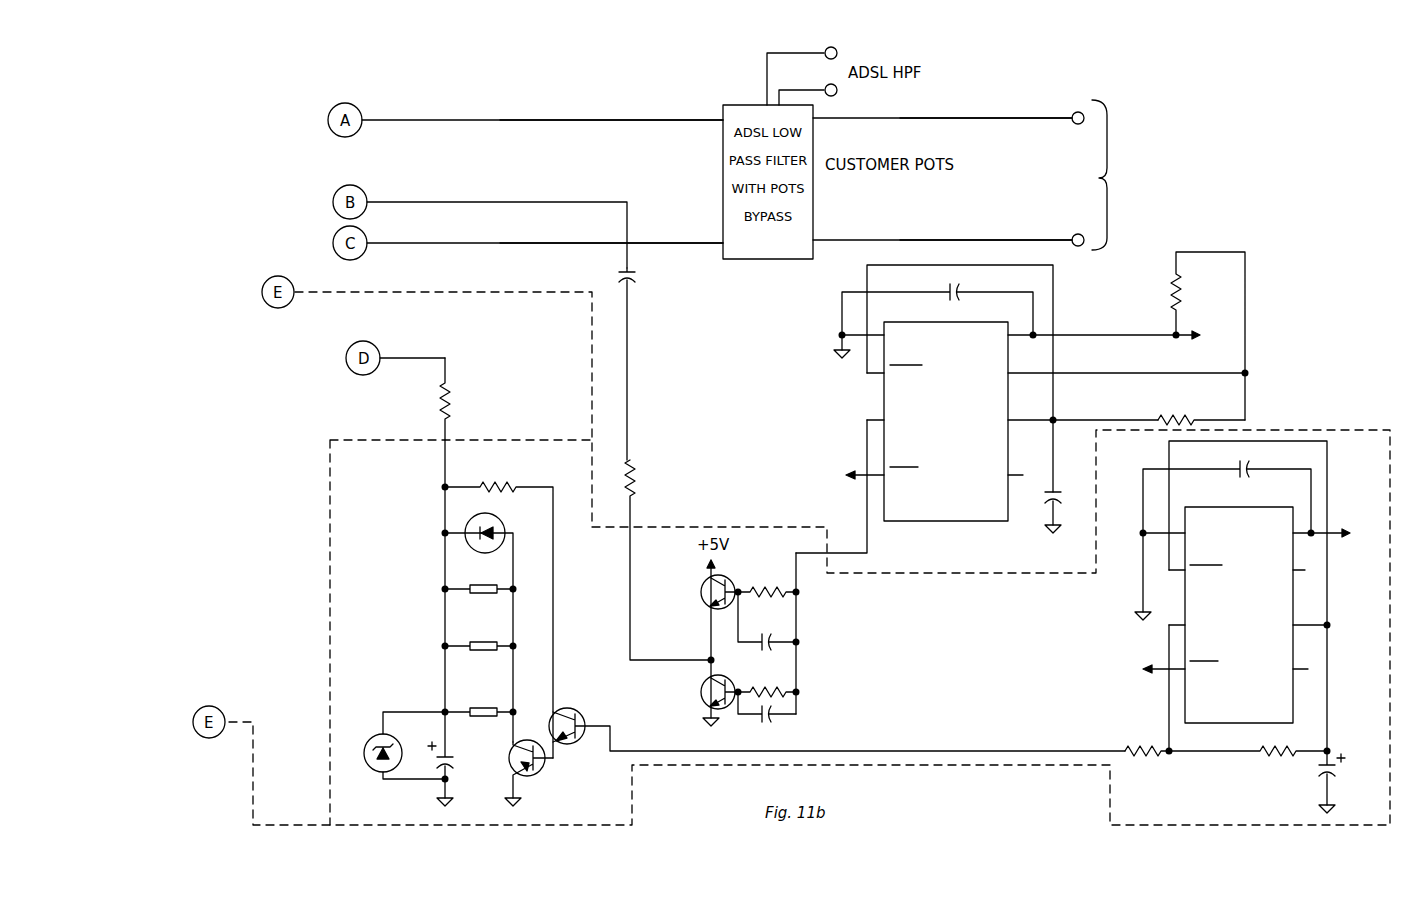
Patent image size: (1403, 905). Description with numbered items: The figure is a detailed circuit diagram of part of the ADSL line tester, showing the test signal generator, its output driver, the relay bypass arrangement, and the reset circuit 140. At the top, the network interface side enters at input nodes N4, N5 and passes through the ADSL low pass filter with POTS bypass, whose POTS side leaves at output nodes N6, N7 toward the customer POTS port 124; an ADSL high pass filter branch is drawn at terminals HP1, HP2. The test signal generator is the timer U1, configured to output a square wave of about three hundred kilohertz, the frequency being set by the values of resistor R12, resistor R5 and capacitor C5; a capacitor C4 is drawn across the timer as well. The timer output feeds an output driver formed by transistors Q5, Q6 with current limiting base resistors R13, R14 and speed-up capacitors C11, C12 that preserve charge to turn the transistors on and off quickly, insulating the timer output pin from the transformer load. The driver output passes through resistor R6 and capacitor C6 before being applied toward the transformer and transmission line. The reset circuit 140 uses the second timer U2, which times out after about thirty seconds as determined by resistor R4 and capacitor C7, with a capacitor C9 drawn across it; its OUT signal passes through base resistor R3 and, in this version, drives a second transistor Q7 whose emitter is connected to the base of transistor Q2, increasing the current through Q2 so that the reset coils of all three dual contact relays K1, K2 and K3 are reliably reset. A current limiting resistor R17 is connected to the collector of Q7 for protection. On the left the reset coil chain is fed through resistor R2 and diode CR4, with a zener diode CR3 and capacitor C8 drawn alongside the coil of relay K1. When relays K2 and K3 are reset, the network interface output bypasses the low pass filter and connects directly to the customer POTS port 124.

The input node N4 is at (679, 116).
The input node N5 is at (679, 240).
The output node N6 is at (1008, 116).
The output node N7 is at (1008, 240).
The customer POTS port 124 is at (1116, 175).
The reset circuit 140 is at (1354, 428).
The ADSL HPF terminal HP1 is at (802, 69).
The ADSL HPF terminal HP2 is at (808, 88).
The capacitor C6 is at (639, 364).
The resistor R2 is at (459, 399).
The current limiting resistor R17 is at (498, 608).
The diode CR4 is at (488, 548).
The dual contact relay K2 is at (479, 590).
The dual contact relay K3 is at (479, 647).
The relay K1 is at (479, 713).
The transistor Q2 is at (523, 773).
The second transistor Q7 is at (837, 732).
The zener diode CR3 6.8V CR3 is at (393, 758).
The capacitor C8 is at (453, 759).
The resistor R6 is at (668, 560).
The transistor Q5 is at (711, 592).
The transistor Q6 is at (711, 692).
The current limiting base resistor R13 is at (769, 581).
The speed-up capacitor C11 is at (769, 621).
The current limiting base resistor R14 is at (769, 681).
The speed-up capacitor C12 is at (767, 719).
The LMC555 timer U1 is at (1019, 409).
The capacitor C4 is at (939, 306).
The resistor R12 is at (1210, 336).
The resistor R5 is at (1201, 408).
The LMC555 timer U2 is at (1248, 598).
The capacitor C9 is at (1227, 492).
The capacitor C5 is at (1134, 576).
The base resistor R3 is at (1147, 765).
The resistor R4 is at (1250, 765).
The capacitor C7 is at (1339, 782).